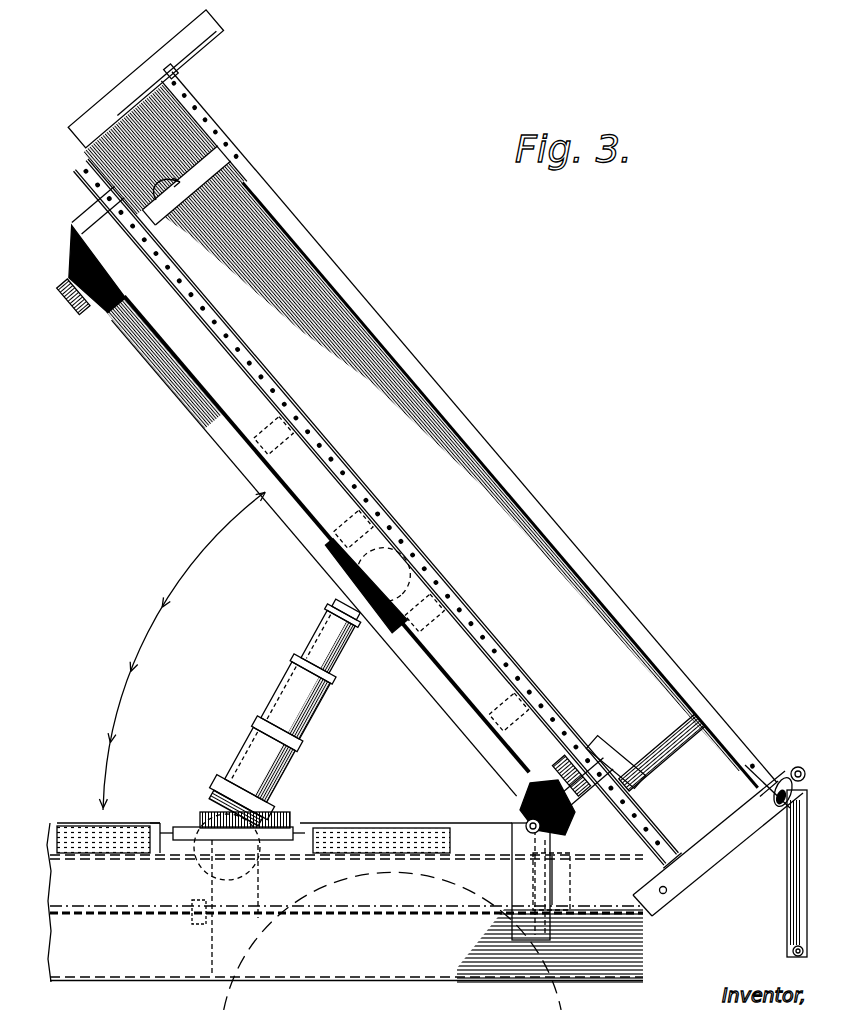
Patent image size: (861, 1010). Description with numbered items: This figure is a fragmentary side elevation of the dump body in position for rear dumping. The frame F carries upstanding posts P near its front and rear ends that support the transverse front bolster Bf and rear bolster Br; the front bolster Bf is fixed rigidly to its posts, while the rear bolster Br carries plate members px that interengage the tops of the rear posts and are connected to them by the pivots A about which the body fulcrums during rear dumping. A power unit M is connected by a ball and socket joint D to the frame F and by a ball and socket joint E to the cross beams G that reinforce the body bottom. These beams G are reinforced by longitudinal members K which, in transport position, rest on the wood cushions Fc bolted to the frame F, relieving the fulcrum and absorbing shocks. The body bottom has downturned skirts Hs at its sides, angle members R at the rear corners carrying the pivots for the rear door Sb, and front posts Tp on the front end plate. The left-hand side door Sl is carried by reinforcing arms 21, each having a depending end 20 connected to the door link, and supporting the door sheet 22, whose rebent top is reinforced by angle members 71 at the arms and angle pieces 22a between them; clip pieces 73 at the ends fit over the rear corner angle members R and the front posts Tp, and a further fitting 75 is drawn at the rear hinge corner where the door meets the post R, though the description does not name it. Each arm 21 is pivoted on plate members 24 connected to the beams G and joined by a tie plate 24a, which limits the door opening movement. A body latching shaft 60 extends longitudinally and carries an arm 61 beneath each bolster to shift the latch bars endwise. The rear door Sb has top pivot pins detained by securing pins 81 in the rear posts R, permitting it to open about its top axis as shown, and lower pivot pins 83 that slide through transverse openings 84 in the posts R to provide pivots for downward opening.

The depending end 20 is at (342, 496).
The reinforcing arm 21 is at (423, 468).
The door sheet 22 is at (466, 433).
The angle pieces 22a is at (377, 512).
The plate members 24 is at (87, 271).
The tie plate 24a is at (324, 537).
The body latching shaft 60 is at (406, 912).
The arm 61 is at (540, 878).
The angle members 71 is at (604, 743).
The clip pieces 73 is at (171, 71).
The tailgate hinge bracket 75 is at (770, 797).
The securing pins 81 is at (806, 772).
The lower pivot pins 83 is at (792, 954).
The transverse openings 84 is at (667, 892).
The front posts Tp is at (145, 79).
The left-hand side door Sl is at (413, 459).
The longitudinal members K is at (320, 546).
The cross beams G is at (391, 574).
The ball and socket joint E is at (378, 571).
The downturned skirts Hs is at (308, 490).
The power unit M is at (311, 723).
The ball and socket joint D is at (200, 824).
The frame F is at (322, 868).
The wood cushions Fc is at (96, 832).
The pivots A is at (526, 820).
The posts P is at (520, 838).
The plate members px is at (560, 850).
The rear bolster Br is at (556, 762).
The angle members R is at (722, 846).
The rear door Sb is at (790, 890).
The front bolster Bf is at (146, 296).